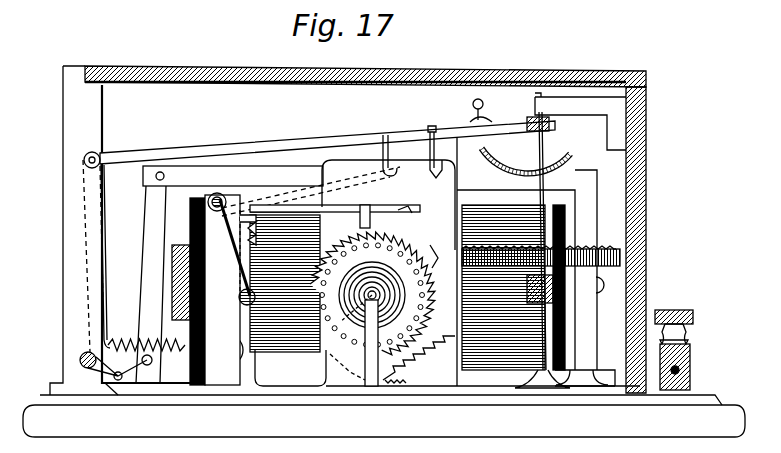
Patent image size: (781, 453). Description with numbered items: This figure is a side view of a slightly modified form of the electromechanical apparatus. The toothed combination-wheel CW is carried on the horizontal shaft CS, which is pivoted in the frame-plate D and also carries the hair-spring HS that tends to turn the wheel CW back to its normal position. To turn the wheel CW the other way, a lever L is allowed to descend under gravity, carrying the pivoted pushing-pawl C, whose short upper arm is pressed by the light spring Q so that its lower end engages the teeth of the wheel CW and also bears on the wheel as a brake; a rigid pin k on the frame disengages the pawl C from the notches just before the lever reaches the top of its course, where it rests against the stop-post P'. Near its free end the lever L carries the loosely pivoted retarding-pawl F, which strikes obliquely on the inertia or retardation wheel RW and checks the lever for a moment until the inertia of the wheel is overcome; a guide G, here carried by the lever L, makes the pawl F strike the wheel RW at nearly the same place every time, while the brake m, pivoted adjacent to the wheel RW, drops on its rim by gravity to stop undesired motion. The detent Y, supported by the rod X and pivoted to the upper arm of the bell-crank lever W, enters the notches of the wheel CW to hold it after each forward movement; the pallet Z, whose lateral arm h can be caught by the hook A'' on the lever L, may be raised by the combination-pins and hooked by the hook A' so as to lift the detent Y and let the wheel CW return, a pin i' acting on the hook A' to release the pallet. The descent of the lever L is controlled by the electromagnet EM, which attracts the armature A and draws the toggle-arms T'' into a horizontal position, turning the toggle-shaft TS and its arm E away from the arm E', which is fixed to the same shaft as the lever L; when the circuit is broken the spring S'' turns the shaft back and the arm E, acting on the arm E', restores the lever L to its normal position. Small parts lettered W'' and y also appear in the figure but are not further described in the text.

The lever L is at (319, 142).
The stop-post P' is at (580, 121).
The spring Q is at (476, 103).
The toggle-shaft TS is at (80, 355).
The arm E' is at (111, 256).
The arm E is at (145, 334).
The spring S'' is at (168, 361).
The toggle-arms T'' is at (111, 393).
The armature A is at (229, 274).
The bell-crank lever W is at (229, 340).
The pulley W'' is at (231, 249).
The electromagnet EM is at (285, 299).
The rod X is at (275, 231).
The pallet Z is at (335, 209).
The hook A'' is at (372, 155).
The hook A' is at (425, 152).
The horizontal pin i' is at (440, 182).
The lip or arm of the pallet h is at (405, 201).
The pushing-pawl C is at (457, 222).
The pin k is at (434, 254).
The detent Y is at (372, 293).
The hair-spring HS is at (379, 295).
The horizontal shaft CS is at (345, 311).
The pin y is at (346, 340).
The frame-plate D is at (371, 353).
The combination-wheel CW is at (392, 359).
The retardation wheel RW is at (622, 256).
The retarding-pawl F is at (544, 150).
The brake m is at (525, 161).
The guide G is at (585, 153).